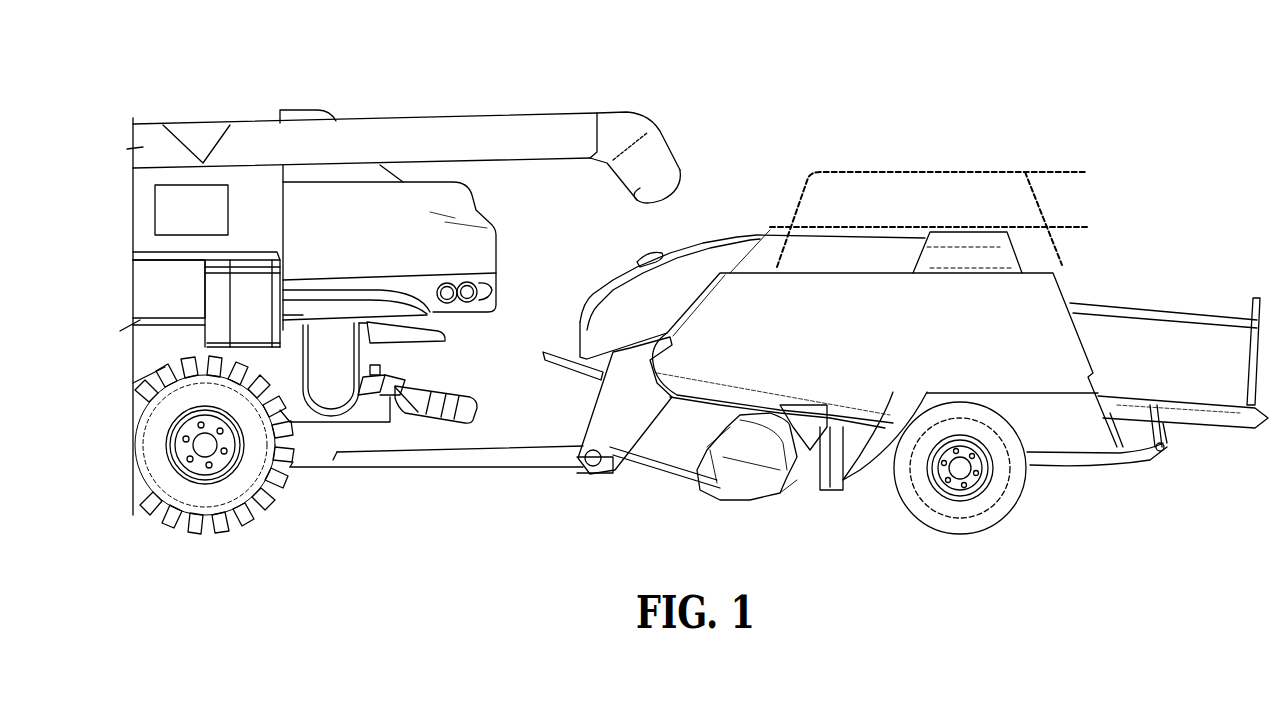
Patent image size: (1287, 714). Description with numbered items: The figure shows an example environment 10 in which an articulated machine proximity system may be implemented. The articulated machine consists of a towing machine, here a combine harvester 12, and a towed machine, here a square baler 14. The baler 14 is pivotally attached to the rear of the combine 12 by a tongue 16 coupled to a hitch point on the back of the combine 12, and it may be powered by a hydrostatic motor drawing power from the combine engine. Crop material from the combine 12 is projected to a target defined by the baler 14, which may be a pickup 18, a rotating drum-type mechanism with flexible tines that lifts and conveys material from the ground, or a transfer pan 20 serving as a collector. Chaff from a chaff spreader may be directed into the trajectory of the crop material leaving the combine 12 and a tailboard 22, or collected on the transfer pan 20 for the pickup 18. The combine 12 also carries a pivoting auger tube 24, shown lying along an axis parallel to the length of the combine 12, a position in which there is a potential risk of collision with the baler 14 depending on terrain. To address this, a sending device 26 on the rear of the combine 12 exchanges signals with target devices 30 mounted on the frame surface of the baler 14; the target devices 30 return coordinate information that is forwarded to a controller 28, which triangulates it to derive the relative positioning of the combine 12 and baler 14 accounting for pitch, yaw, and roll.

The example environment 10 is at (1003, 122).
The combine harvester 12 is at (495, 88).
The square baler 14 is at (1070, 162).
The tongue 16 is at (430, 457).
The pickup 18 is at (750, 495).
The transfer pan 20 is at (650, 463).
The tailboard 22 is at (440, 388).
The pivoting auger tube 24 is at (632, 110).
The sending device 26 is at (497, 280).
The controller 28 is at (191, 210).
The target device 30 is at (655, 250).